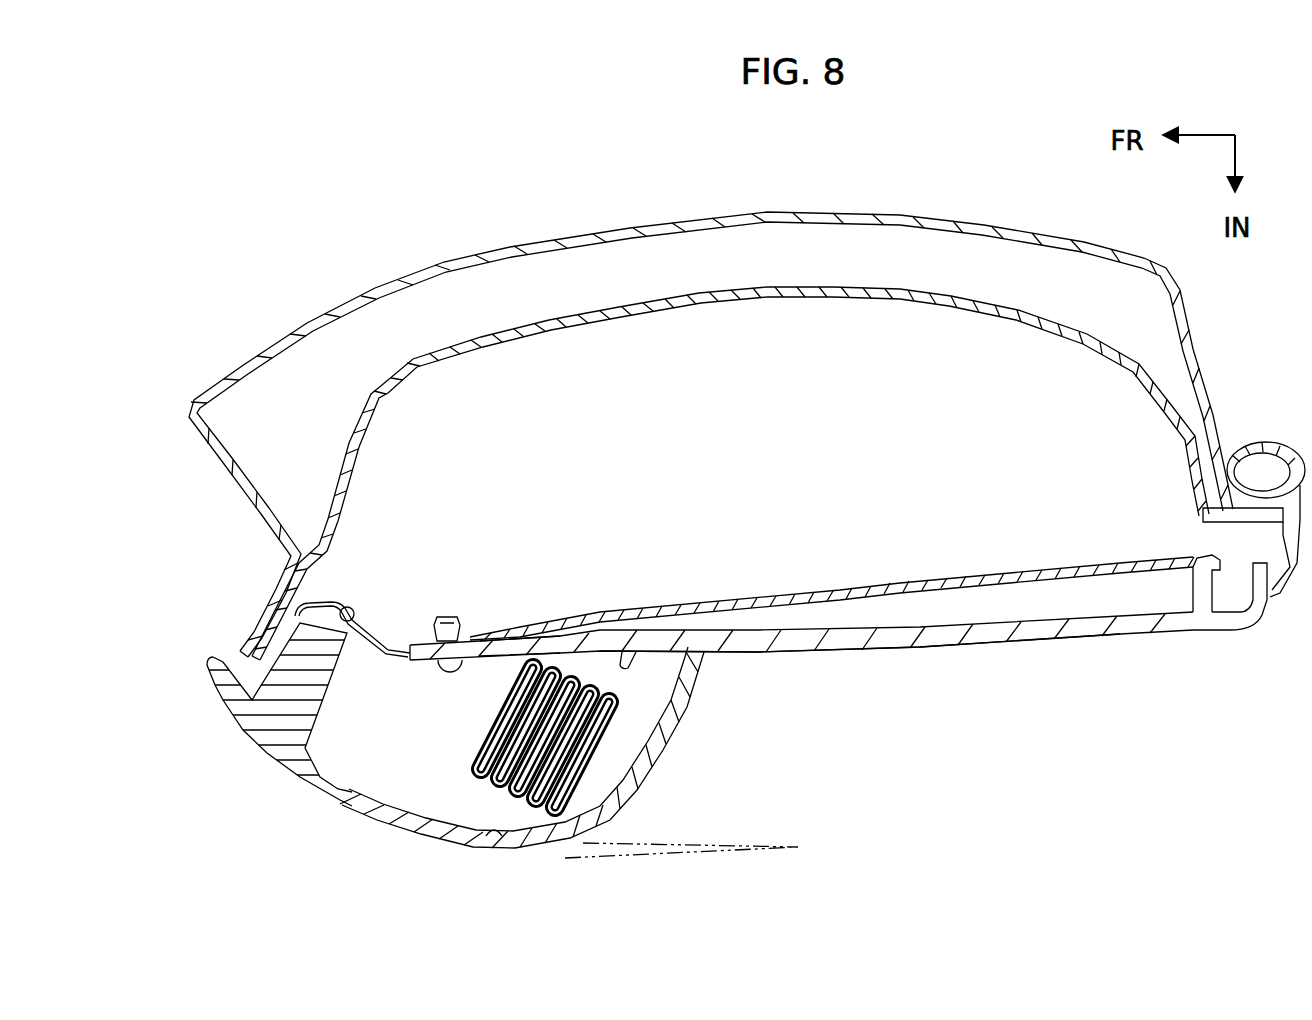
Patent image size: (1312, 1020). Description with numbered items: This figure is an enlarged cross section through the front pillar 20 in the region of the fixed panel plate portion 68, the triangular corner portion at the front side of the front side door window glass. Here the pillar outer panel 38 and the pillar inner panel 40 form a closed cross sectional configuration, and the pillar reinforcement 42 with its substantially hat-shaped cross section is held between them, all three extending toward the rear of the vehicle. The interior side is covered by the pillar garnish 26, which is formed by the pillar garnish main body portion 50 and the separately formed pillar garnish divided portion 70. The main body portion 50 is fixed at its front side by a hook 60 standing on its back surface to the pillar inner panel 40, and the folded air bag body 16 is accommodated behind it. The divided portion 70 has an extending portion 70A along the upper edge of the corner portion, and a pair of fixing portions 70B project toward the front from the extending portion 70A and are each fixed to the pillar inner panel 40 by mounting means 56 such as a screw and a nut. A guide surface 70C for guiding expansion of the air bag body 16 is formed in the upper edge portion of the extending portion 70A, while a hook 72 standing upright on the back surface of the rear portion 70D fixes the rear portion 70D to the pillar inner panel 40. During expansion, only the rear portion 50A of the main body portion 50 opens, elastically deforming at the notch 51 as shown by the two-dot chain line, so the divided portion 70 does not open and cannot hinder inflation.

The front pillar 20 is at (747, 410).
The pillar outer panel 38 is at (575, 240).
The pillar reinforcement 42 is at (678, 300).
The pillar inner panel 40 is at (775, 594).
The hook 72 is at (1187, 590).
The pillar garnish divided portion 70 is at (781, 661).
The extending portion 70A is at (558, 637).
The fixing portions 70B is at (416, 661).
The guide surface 70C is at (625, 655).
The rear portion 70D is at (1222, 636).
The fixed panel plate portion 68 is at (1058, 639).
The mounting means 56 is at (447, 679).
The hook 60 is at (333, 680).
The air bag body 16 is at (489, 790).
The pillar garnish main body portion 50 is at (510, 750).
The rear portion 50A is at (652, 832).
The notch 51 is at (497, 836).
The pillar garnish 26 is at (737, 714).